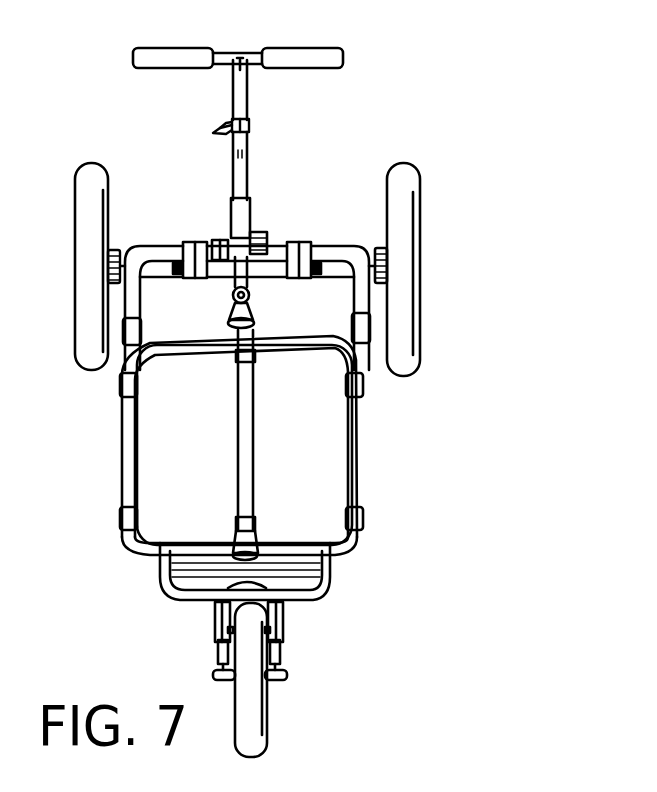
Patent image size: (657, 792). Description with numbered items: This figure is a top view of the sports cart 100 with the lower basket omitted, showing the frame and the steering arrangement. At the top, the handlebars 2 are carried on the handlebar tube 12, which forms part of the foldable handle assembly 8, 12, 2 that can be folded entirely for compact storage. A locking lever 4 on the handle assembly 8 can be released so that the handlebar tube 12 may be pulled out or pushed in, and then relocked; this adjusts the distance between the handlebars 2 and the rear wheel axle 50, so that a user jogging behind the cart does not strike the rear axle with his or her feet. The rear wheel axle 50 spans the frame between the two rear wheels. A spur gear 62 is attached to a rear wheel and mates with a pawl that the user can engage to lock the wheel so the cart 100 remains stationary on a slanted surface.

The handlebars 2 is at (326, 52).
The handlebar tube 12 is at (247, 98).
The locking lever 4 is at (249, 125).
The handle assembly 8 is at (247, 178).
The rear wheel axle 50 is at (273, 262).
The spur gear 62 is at (126, 245).
The sports cart 100 is at (377, 707).